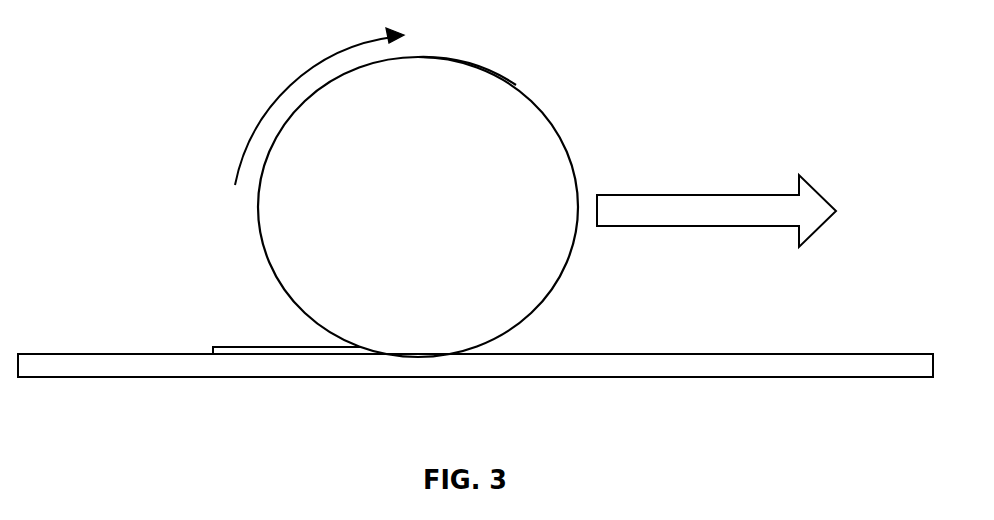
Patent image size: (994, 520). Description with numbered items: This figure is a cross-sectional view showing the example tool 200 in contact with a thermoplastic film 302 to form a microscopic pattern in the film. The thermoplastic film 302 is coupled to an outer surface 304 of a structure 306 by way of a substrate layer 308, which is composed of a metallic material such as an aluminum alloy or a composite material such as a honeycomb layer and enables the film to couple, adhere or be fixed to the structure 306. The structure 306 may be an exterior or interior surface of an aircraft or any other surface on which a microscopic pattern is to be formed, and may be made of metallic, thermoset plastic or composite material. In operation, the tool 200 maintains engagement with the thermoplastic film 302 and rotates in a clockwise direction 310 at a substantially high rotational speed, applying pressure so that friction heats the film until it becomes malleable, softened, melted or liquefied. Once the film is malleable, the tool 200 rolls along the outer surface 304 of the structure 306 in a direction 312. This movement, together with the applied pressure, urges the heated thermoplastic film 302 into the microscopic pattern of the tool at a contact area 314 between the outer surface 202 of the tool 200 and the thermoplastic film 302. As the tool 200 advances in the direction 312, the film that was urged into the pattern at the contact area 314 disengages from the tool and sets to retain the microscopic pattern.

The tool 200 is at (432, 72).
The outer surface of the tool 202 is at (516, 85).
The thermoplastic film 302 is at (241, 345).
The outer surface of the structure 304 is at (768, 354).
The structure 306 is at (627, 367).
The substrate layer 308 is at (593, 354).
The clockwise direction 310 is at (268, 96).
The direction 312 is at (712, 195).
The contact area 314 is at (420, 357).